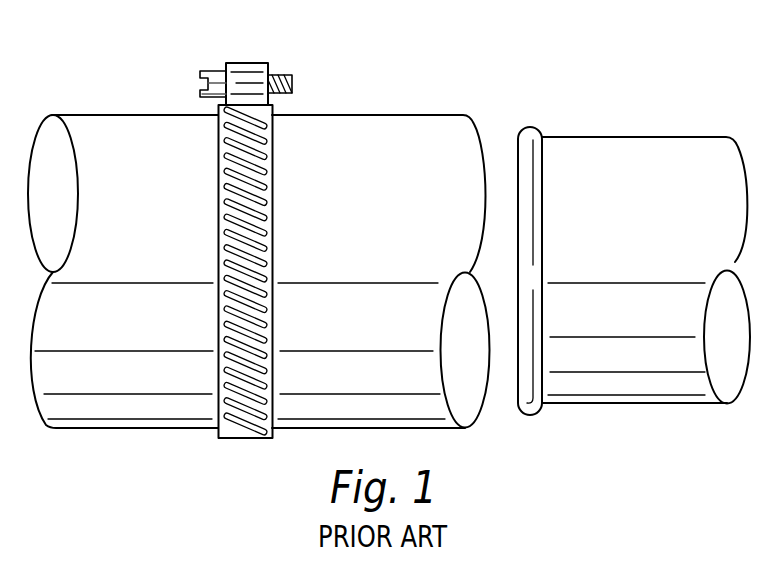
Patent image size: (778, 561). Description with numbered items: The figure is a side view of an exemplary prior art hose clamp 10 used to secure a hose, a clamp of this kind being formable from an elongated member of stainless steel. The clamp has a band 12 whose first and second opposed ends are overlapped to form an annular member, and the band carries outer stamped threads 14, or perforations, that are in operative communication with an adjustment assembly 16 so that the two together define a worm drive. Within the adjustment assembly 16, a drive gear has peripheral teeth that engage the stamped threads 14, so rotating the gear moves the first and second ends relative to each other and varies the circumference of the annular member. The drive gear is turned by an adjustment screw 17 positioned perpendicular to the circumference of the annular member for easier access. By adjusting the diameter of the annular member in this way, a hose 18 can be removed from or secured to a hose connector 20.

The hose clamp 10 is at (506, 72).
The band 12 is at (275, 253).
The stamped threads 14 is at (232, 179).
The adjustment assembly 16 is at (284, 48).
The adjustment screw 17 is at (200, 72).
The hose 18 is at (115, 428).
The hose connector 20 is at (628, 145).